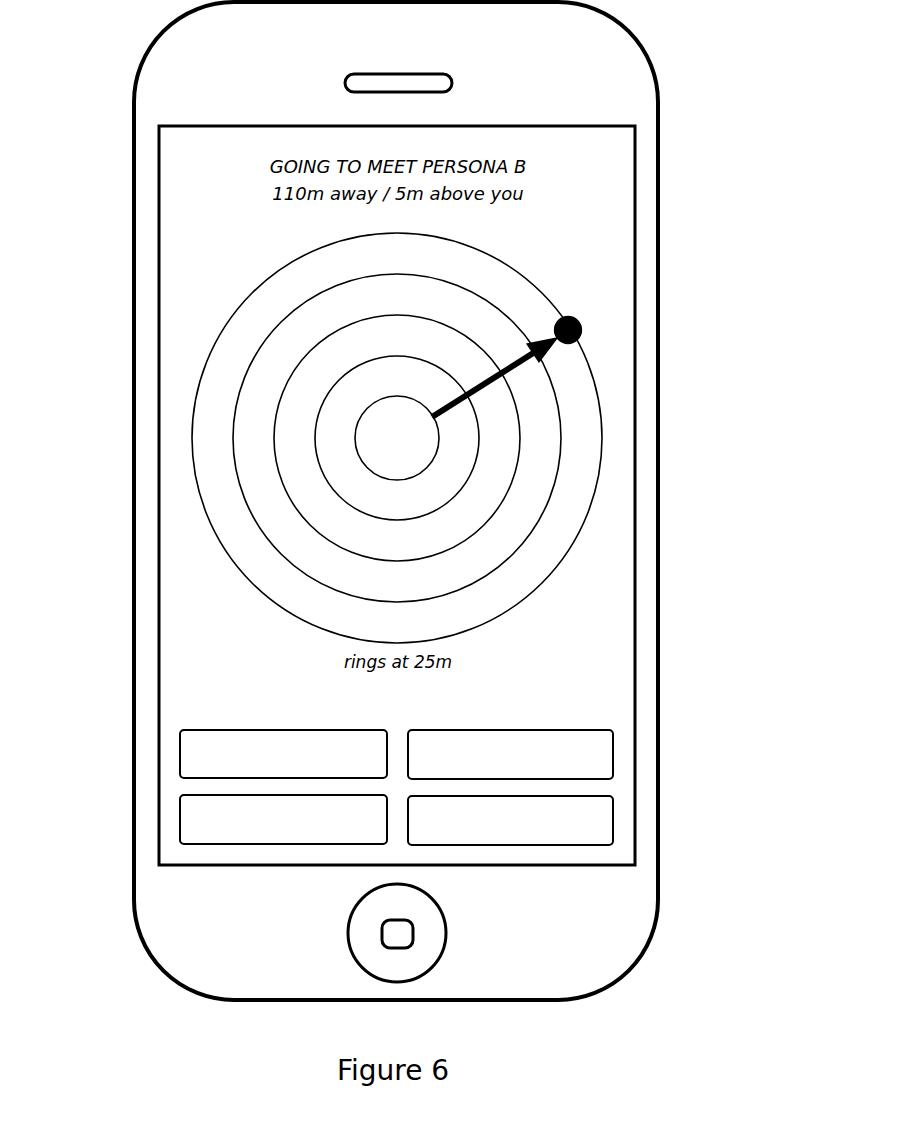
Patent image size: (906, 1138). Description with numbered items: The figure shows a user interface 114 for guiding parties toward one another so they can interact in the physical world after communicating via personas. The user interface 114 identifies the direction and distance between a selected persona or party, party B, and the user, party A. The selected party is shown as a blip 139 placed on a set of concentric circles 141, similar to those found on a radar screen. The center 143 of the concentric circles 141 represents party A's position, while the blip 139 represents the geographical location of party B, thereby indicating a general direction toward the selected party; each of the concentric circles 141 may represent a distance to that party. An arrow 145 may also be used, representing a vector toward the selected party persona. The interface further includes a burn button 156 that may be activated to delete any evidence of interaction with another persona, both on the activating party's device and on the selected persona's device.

The user interface 114 is at (600, 215).
The blip 139 is at (582, 325).
The concentric circles 141 is at (555, 483).
The center 143 is at (384, 440).
The arrow 145 is at (492, 387).
The burn button 156 is at (602, 825).